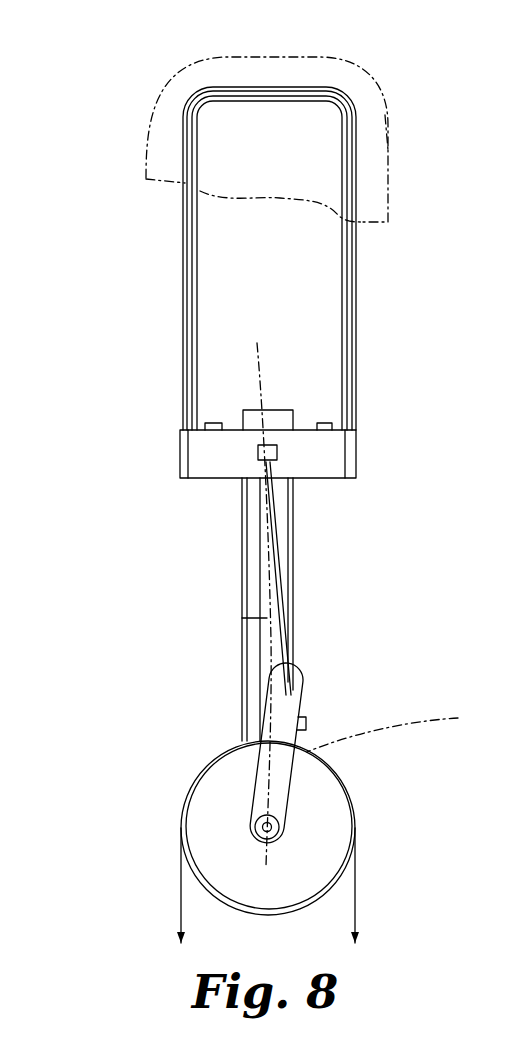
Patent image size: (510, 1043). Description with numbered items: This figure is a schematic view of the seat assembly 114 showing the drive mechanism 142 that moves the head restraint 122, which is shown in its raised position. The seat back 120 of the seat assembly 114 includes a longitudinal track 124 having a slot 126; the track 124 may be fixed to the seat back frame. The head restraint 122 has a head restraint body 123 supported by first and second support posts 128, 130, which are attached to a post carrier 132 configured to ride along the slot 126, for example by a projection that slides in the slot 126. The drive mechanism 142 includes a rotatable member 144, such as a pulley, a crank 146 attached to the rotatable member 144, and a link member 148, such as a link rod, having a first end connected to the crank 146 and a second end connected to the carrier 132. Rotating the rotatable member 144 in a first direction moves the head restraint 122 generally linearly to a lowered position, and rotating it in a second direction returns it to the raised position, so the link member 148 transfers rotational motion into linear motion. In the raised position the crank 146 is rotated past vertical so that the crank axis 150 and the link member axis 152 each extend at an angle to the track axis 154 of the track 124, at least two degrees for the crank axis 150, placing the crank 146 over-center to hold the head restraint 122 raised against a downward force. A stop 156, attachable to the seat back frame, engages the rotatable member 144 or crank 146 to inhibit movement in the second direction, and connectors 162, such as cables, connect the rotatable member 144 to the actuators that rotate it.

The seat assembly 114 is at (132, 91).
The seat back 120 is at (219, 651).
The head restraint 122 is at (392, 71).
The head restraint body 123 is at (388, 147).
The longitudinal track 124 is at (296, 546).
The slot 126 is at (262, 566).
The first support post 128 is at (188, 236).
The second support post 130 is at (350, 206).
The post carrier 132 is at (341, 456).
The drive mechanism 142 is at (358, 761).
The rotatable member 144 is at (355, 808).
The crank 146 is at (305, 700).
The link member 148 is at (284, 612).
The crank axis 150 is at (401, 730).
The link member axis 152 is at (258, 377).
The track axis 154 is at (245, 618).
The stop 156 is at (309, 723).
The connector 162 is at (181, 900).